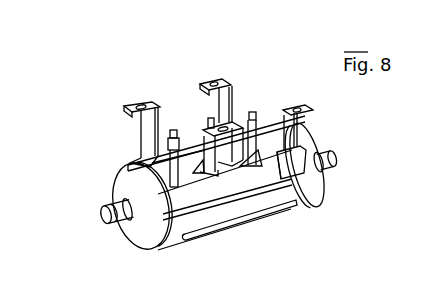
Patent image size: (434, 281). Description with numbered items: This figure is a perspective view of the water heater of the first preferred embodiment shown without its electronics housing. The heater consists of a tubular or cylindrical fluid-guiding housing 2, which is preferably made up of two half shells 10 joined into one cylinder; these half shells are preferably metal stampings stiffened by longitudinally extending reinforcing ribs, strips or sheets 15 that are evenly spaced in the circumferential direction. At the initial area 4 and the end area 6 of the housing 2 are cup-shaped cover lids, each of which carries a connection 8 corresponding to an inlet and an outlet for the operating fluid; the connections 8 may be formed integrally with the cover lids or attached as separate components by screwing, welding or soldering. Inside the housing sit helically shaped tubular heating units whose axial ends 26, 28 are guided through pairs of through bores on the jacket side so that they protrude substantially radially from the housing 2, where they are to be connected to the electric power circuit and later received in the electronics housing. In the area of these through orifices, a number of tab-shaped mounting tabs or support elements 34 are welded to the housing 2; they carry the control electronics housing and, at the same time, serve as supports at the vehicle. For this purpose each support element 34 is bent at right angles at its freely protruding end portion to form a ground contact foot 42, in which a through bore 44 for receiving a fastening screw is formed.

The housing 2 is at (288, 60).
The initial area 4 is at (118, 190).
The end area 6 is at (317, 138).
The connection 8 is at (108, 224).
The half shell 10 is at (296, 206).
The reinforcing rib 15 is at (221, 224).
The axial end 26 is at (168, 143).
The axial end 28 is at (175, 165).
The mounting tab 34 is at (231, 105).
The ground contact foot 42 is at (205, 80).
The through bore 44 is at (138, 105).